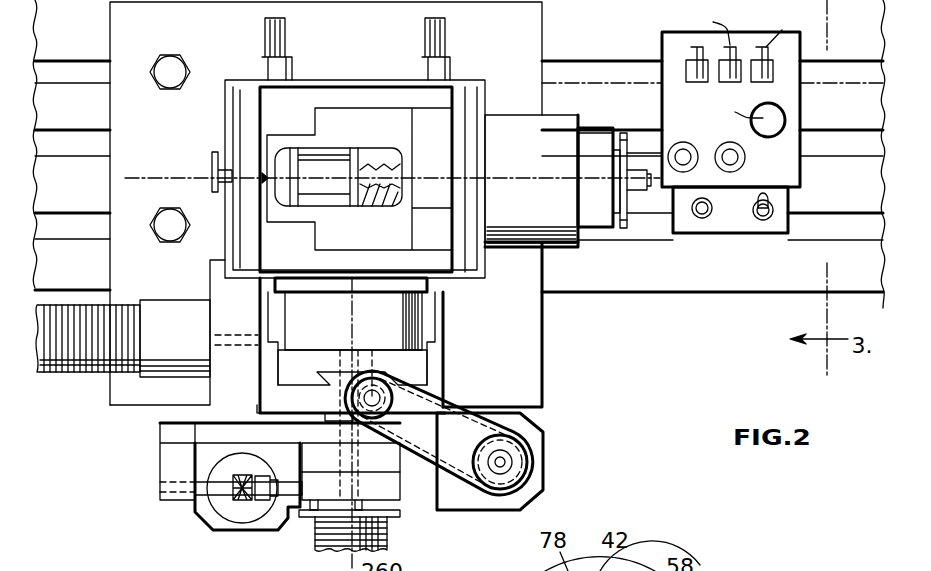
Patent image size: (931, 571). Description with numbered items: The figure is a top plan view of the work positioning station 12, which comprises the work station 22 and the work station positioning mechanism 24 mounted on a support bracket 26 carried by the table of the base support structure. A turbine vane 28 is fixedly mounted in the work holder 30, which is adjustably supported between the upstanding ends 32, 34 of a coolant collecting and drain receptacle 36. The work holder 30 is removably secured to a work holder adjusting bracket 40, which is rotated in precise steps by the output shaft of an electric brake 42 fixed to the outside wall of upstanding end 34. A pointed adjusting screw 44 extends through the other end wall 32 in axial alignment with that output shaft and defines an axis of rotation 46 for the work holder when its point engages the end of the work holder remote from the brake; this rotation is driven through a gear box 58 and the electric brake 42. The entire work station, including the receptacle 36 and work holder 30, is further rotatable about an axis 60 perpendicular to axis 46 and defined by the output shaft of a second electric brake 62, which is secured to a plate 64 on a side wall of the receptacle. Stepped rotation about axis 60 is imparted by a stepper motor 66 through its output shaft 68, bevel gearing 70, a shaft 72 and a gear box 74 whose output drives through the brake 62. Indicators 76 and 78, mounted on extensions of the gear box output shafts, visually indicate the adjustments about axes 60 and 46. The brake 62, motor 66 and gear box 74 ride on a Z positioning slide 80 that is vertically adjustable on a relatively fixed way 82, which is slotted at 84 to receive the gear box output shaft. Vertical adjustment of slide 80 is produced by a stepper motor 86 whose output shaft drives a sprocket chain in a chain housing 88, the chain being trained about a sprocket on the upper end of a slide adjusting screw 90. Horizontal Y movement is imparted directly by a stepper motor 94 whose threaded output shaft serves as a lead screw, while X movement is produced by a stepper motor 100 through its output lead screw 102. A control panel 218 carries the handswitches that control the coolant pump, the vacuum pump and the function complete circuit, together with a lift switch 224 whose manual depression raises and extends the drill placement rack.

The work positioning station 12 is at (595, 342).
The work station 22 is at (228, 70).
The work station positioning mechanism 24 is at (147, 452).
The support bracket 26 is at (527, 390).
The turbine vane 28 is at (318, 170).
The work holder 30 is at (336, 234).
The upstanding end 32 is at (240, 115).
The upstanding end 34 is at (463, 100).
The coolant collecting and drain receptacle 36 is at (306, 83).
The work holder adjusting bracket 40 is at (430, 142).
The electric brake 42 is at (536, 210).
The pointed adjusting screw 44 is at (212, 168).
The axis of rotation 46 is at (556, 180).
The gear box 58 is at (592, 150).
The axis 60 is at (352, 305).
The electric brake 62 is at (415, 320).
The plate 64 is at (324, 284).
The stepper motor 66 is at (240, 509).
The output shaft 68 is at (240, 490).
The bevel gearing 70 is at (262, 503).
The shaft 72 is at (285, 480).
The gear box 74 is at (385, 486).
The indicator 76 is at (313, 519).
The indicator 78 is at (627, 222).
The Z positioning slide 80 is at (430, 368).
The way 82 is at (277, 391).
The slot 84 is at (342, 366).
The stepper motor 86 is at (533, 462).
The chain housing 88 is at (490, 443).
The slide adjusting screw 90 is at (372, 366).
The stepper motor 94 is at (390, 535).
The stepper motor 100 is at (93, 356).
The output lead screw 102 is at (230, 336).
The control panel 218 is at (790, 99).
The lift switch 224 is at (688, 156).